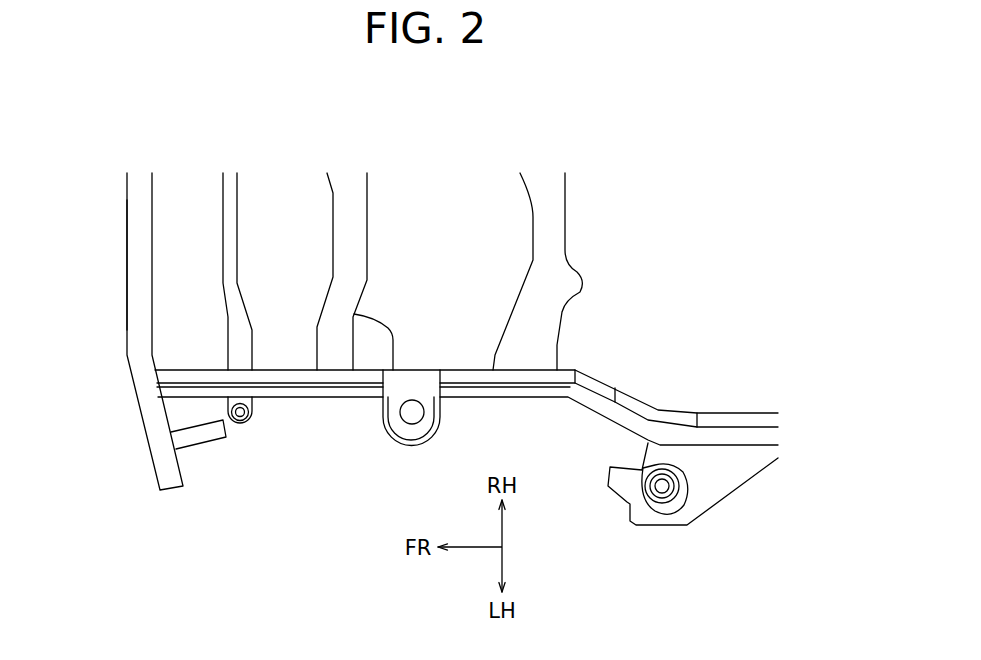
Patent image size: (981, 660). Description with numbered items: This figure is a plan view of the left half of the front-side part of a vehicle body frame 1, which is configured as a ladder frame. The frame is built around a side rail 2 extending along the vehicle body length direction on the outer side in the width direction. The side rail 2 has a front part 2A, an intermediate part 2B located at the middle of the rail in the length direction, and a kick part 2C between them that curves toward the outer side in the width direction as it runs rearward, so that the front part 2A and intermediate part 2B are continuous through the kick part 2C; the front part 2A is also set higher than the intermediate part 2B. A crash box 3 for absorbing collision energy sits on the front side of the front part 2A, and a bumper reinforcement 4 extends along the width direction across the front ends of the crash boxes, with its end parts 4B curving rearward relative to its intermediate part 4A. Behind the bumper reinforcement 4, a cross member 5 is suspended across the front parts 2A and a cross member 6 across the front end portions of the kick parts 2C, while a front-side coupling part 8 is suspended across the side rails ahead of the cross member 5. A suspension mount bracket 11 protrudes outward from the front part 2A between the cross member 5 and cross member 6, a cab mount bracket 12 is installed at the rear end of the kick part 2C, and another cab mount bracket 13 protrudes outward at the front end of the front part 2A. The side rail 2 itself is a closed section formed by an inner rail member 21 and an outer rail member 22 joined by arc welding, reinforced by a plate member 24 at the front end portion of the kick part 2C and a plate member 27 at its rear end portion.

The vehicle body frame 1 is at (180, 115).
The side rail 2 is at (468, 391).
The front part 2A is at (330, 398).
The intermediate part 2B is at (745, 410).
The kick part 2C is at (610, 419).
The crash box 3 is at (188, 372).
The bumper reinforcement 4 is at (125, 285).
The intermediate part 4A is at (137, 232).
The end part 4B is at (157, 428).
The cross member 5 is at (345, 230).
The cross member 6 is at (543, 230).
The front-side coupling part 8 is at (233, 230).
The suspension mount bracket 11 is at (410, 448).
The cab mount bracket 12 is at (652, 518).
The cab mount bracket 13 is at (238, 425).
The inner rail member 21 is at (273, 372).
The outer rail member 22 is at (275, 390).
The plate member 24 is at (528, 375).
The plate member 27 is at (660, 412).